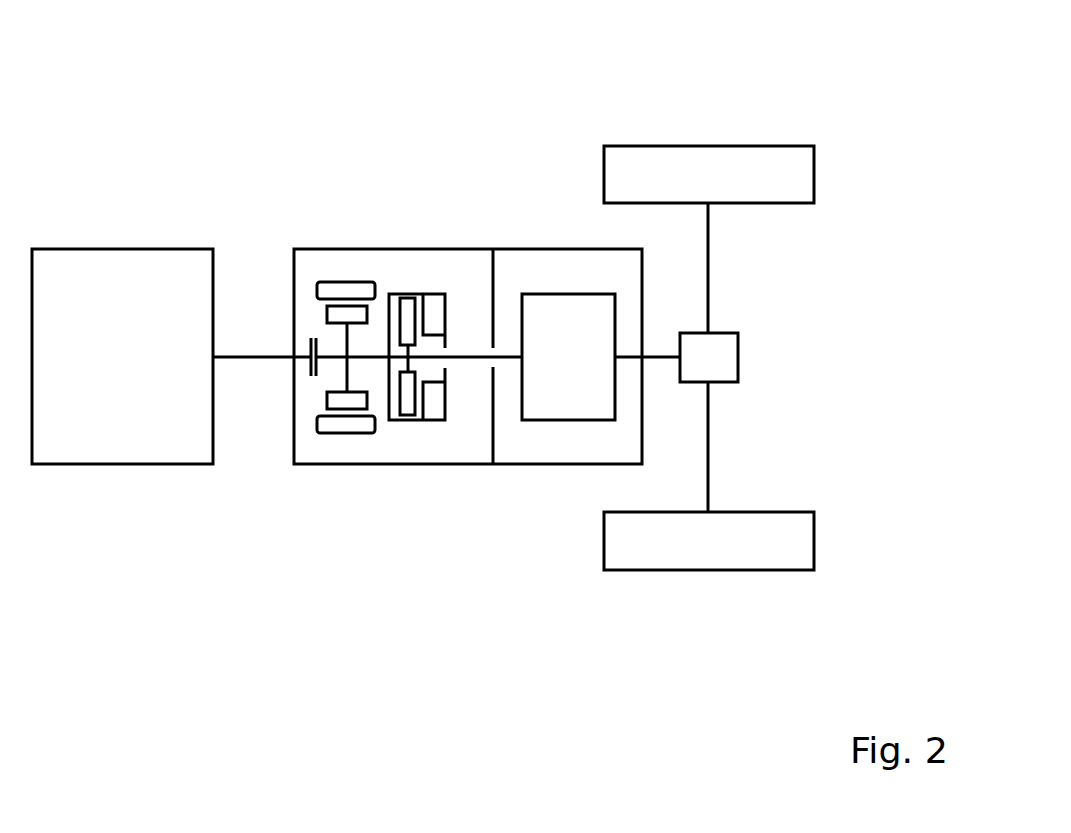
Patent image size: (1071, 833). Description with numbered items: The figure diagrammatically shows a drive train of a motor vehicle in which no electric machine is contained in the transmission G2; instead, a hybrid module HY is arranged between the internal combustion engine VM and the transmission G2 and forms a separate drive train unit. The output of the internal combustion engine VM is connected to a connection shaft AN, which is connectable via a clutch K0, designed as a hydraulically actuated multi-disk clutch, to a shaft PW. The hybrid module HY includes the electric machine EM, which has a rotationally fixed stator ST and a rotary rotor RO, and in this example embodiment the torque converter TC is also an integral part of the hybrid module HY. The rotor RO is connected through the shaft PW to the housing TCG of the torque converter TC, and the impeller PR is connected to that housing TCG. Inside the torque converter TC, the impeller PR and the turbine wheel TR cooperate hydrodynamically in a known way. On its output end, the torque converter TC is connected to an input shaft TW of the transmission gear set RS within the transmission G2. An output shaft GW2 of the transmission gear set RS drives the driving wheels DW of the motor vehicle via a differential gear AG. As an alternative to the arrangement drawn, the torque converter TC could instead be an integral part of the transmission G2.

The internal combustion engine VM is at (129, 249).
The connection shaft AN is at (262, 357).
The clutch K0 is at (307, 318).
The electric machine EM is at (269, 356).
The shaft PW is at (375, 357).
The torque converter TC is at (454, 356).
The input shaft TW is at (467, 357).
The transmission G2 is at (562, 220).
The driving wheels DW is at (728, 146).
The transmission gear set RS is at (598, 294).
The output shaft GW2 is at (665, 357).
The differential gear AG is at (738, 348).
The rotor RO is at (330, 399).
The stator ST is at (335, 425).
The hybrid module HY is at (341, 490).
The turbine wheel TR is at (408, 402).
The housing TCG is at (416, 420).
The impeller PR is at (436, 405).